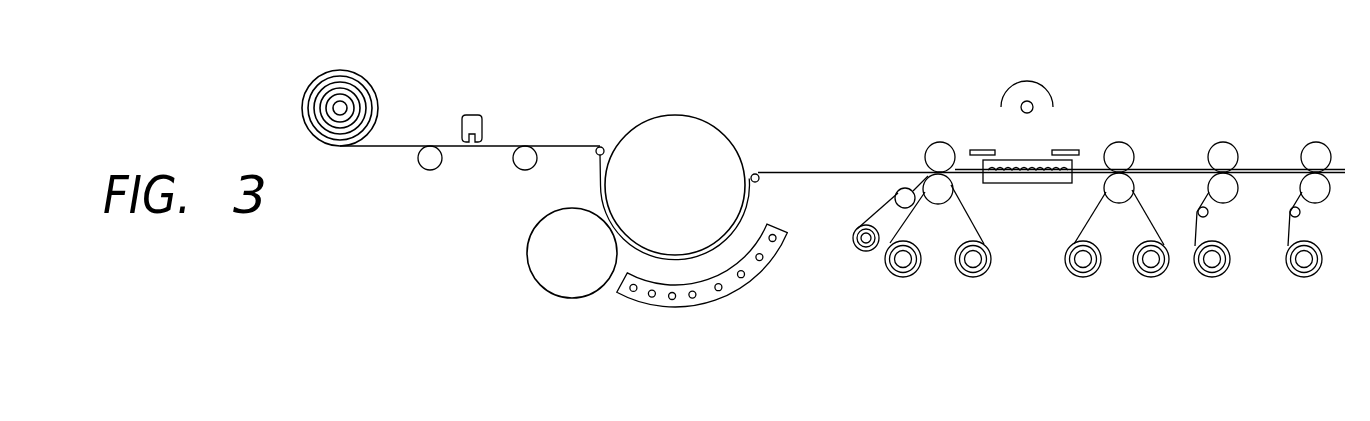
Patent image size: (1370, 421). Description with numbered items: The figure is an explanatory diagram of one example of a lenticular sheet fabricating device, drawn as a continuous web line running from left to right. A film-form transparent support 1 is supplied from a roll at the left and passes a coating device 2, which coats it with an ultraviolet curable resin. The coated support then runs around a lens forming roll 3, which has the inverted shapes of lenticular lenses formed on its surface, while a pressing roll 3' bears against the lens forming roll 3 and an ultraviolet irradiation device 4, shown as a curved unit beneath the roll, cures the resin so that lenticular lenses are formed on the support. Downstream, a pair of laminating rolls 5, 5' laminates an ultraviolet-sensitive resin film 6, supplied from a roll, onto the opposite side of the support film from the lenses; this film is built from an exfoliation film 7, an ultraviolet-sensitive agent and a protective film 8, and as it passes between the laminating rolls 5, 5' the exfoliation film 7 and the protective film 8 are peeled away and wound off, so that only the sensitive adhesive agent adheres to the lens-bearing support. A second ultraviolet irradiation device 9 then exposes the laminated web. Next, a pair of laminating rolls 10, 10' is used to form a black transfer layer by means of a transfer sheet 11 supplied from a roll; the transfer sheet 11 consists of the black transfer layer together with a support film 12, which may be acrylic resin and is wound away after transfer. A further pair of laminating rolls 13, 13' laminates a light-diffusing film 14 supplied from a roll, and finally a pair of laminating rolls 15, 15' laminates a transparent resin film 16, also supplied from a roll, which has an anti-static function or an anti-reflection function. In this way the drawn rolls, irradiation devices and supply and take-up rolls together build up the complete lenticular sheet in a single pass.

The film-form transparent support 1 is at (387, 147).
The coating device 2 is at (472, 115).
The lens forming roll 3 is at (675, 148).
The pressing roll 3' is at (535, 253).
The ultraviolet irradiation device 4 is at (705, 303).
The laminating roll 5 is at (929, 120).
The laminating roll 5' is at (939, 211).
The ultraviolet-sensitive resin film 6 is at (902, 278).
The exfoliation film 7 is at (862, 252).
The protective film 8 is at (973, 278).
The ultraviolet irradiation device 9 is at (1027, 82).
The laminating roll 10 is at (1126, 124).
The laminating roll 10' is at (1123, 213).
The transfer sheet 11 is at (1082, 278).
The support film 12 is at (1151, 278).
The laminating roll 13 is at (1230, 124).
The laminating roll 13' is at (1244, 198).
The light-diffusing film 14 is at (1212, 278).
The laminating roll 15 is at (1322, 126).
The laminating roll 15' is at (1335, 198).
The transparent resin film 16 is at (1304, 278).